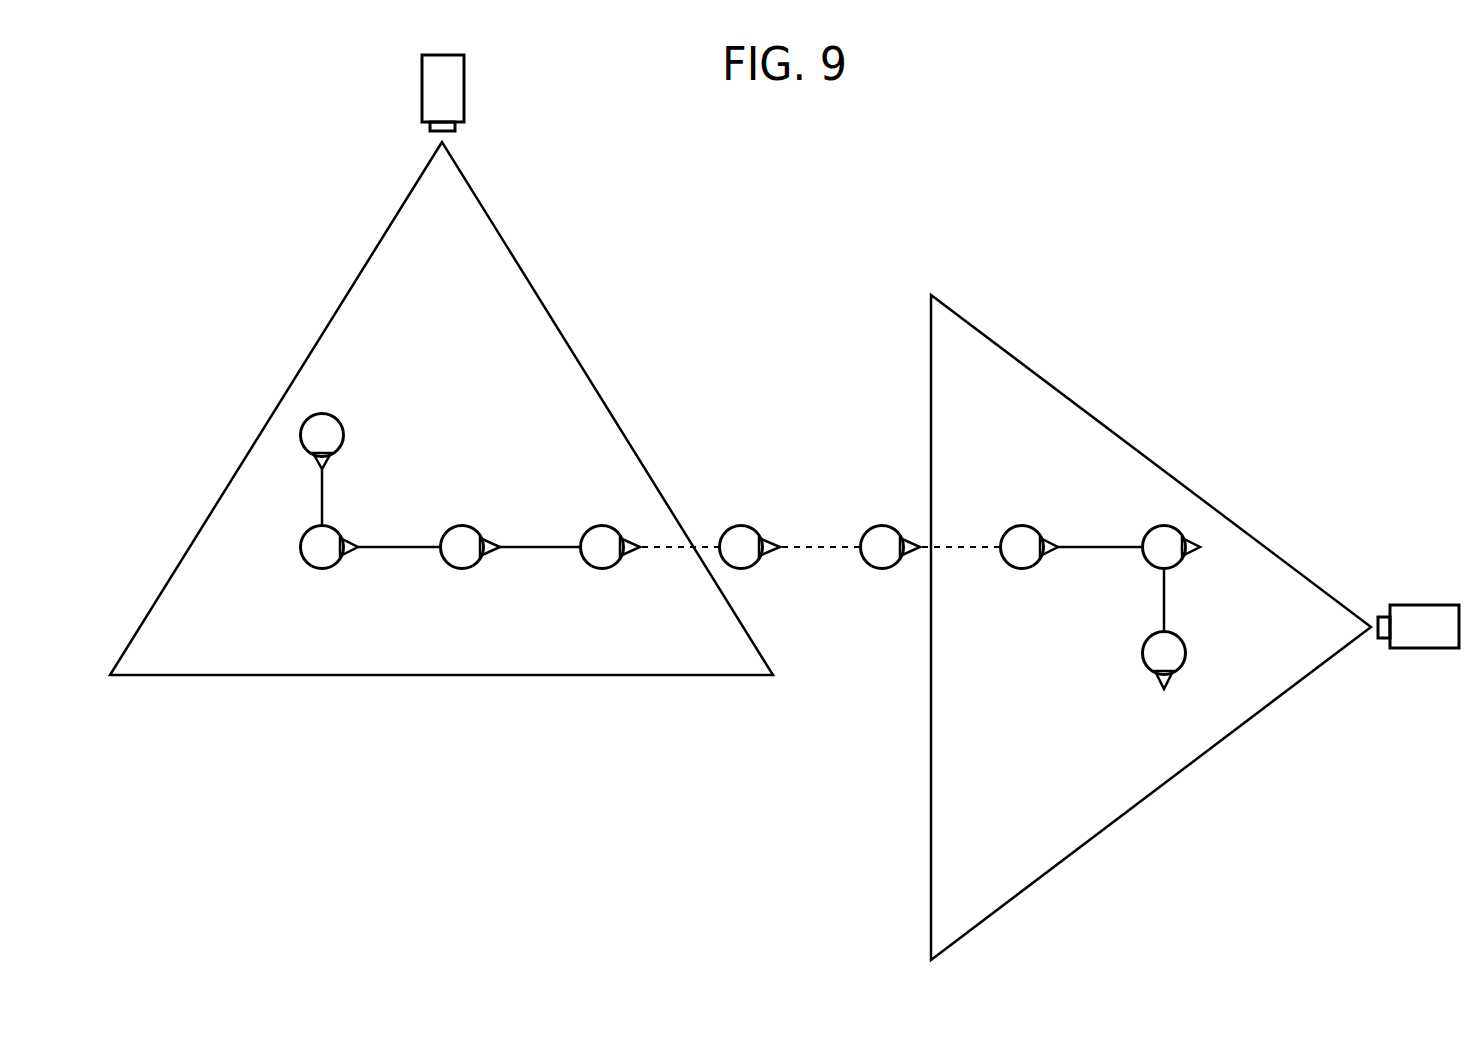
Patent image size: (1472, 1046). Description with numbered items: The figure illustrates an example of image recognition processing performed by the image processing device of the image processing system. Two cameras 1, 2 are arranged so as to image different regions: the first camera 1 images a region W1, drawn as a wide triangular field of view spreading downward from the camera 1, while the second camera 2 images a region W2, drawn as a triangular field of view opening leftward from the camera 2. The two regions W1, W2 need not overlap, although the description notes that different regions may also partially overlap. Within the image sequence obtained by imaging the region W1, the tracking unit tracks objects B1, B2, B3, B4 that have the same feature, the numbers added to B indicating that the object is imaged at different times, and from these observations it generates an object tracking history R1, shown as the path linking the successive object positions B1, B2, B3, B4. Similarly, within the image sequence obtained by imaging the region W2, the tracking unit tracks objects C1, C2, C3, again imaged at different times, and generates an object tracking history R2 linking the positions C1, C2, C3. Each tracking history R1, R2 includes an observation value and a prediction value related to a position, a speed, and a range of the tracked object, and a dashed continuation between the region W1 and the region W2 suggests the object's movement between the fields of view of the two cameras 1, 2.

The camera 1 is at (465, 80).
The camera 2 is at (1427, 605).
The region W1 is at (557, 318).
The region W2 is at (1093, 407).
The object B1 is at (336, 415).
The object B2 is at (341, 531).
The object B3 is at (470, 526).
The object B4 is at (608, 526).
The object tracking history R1 is at (400, 550).
The object C1 is at (1019, 526).
The object C2 is at (1160, 526).
The object C3 is at (1182, 638).
The object tracking history R2 is at (1090, 550).